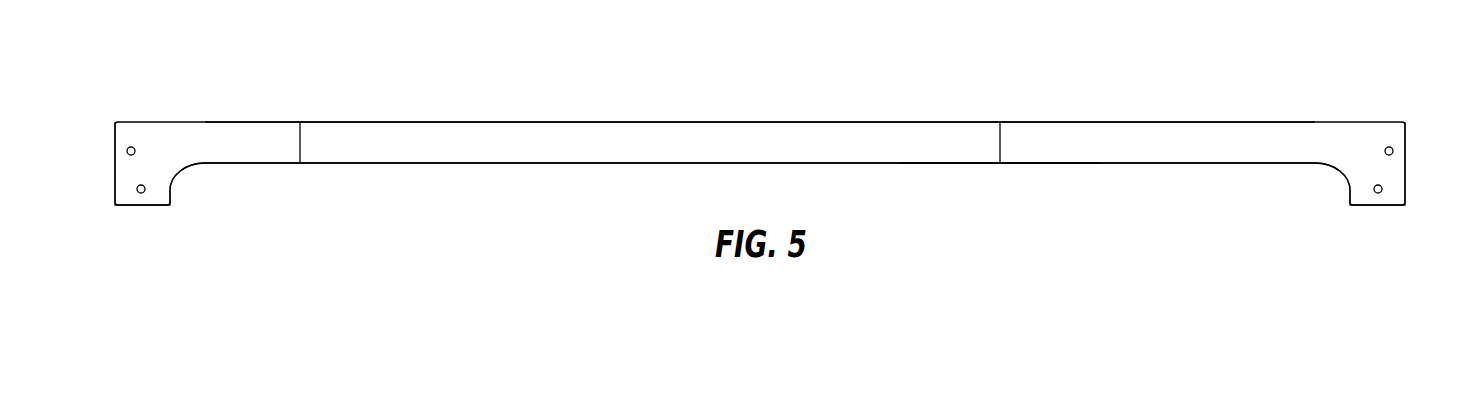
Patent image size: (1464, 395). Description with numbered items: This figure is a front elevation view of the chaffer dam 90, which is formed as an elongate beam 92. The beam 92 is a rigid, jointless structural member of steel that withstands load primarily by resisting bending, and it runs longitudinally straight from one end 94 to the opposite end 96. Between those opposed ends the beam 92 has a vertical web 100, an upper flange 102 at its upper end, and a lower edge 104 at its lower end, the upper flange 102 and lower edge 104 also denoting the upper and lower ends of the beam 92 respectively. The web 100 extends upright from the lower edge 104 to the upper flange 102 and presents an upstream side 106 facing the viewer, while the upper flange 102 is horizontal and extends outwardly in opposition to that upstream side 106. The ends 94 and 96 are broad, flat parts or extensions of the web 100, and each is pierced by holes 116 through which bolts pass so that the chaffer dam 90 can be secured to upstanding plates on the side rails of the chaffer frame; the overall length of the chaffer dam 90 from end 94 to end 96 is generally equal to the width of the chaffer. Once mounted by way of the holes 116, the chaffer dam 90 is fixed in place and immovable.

The chaffer dam 90 is at (808, 76).
The elongate beam 92 is at (1029, 168).
The end 94 is at (1395, 172).
The end 96 is at (125, 172).
The vertical web 100 is at (403, 146).
The upper flange 102 is at (668, 121).
The lower edge 104 is at (950, 163).
The upstream side 106 is at (508, 146).
The holes 116 is at (133, 147).